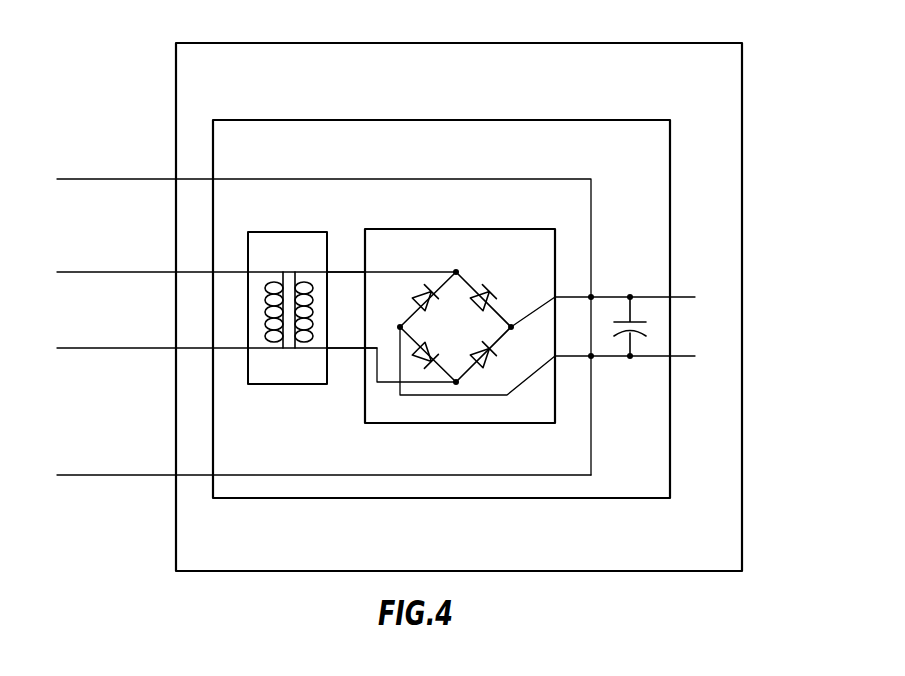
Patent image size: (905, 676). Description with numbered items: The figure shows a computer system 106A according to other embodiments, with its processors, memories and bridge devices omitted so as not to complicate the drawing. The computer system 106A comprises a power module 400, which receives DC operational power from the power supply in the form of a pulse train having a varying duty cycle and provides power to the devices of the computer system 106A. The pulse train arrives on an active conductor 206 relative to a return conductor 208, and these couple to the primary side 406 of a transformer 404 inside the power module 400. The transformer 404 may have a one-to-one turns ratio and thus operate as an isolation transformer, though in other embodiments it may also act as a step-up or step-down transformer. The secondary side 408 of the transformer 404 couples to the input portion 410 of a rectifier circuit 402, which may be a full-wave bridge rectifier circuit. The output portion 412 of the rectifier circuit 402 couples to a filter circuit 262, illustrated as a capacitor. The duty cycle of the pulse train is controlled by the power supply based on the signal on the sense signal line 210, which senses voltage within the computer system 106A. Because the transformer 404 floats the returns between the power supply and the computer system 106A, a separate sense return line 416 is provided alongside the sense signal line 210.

The computer system 106A is at (597, 86).
The power module 400 is at (555, 164).
The rectifier circuit 402 is at (535, 262).
The transformer 404 is at (274, 232).
The primary side 406 is at (232, 310).
The secondary side 408 is at (315, 307).
The input portion 410 is at (360, 318).
The output portion 412 is at (570, 325).
The filter circuit 262 is at (642, 320).
The sense signal line 210 is at (87, 178).
The active conductor 206 is at (93, 271).
The return conductor 208 is at (91, 347).
The sense return line 416 is at (95, 474).